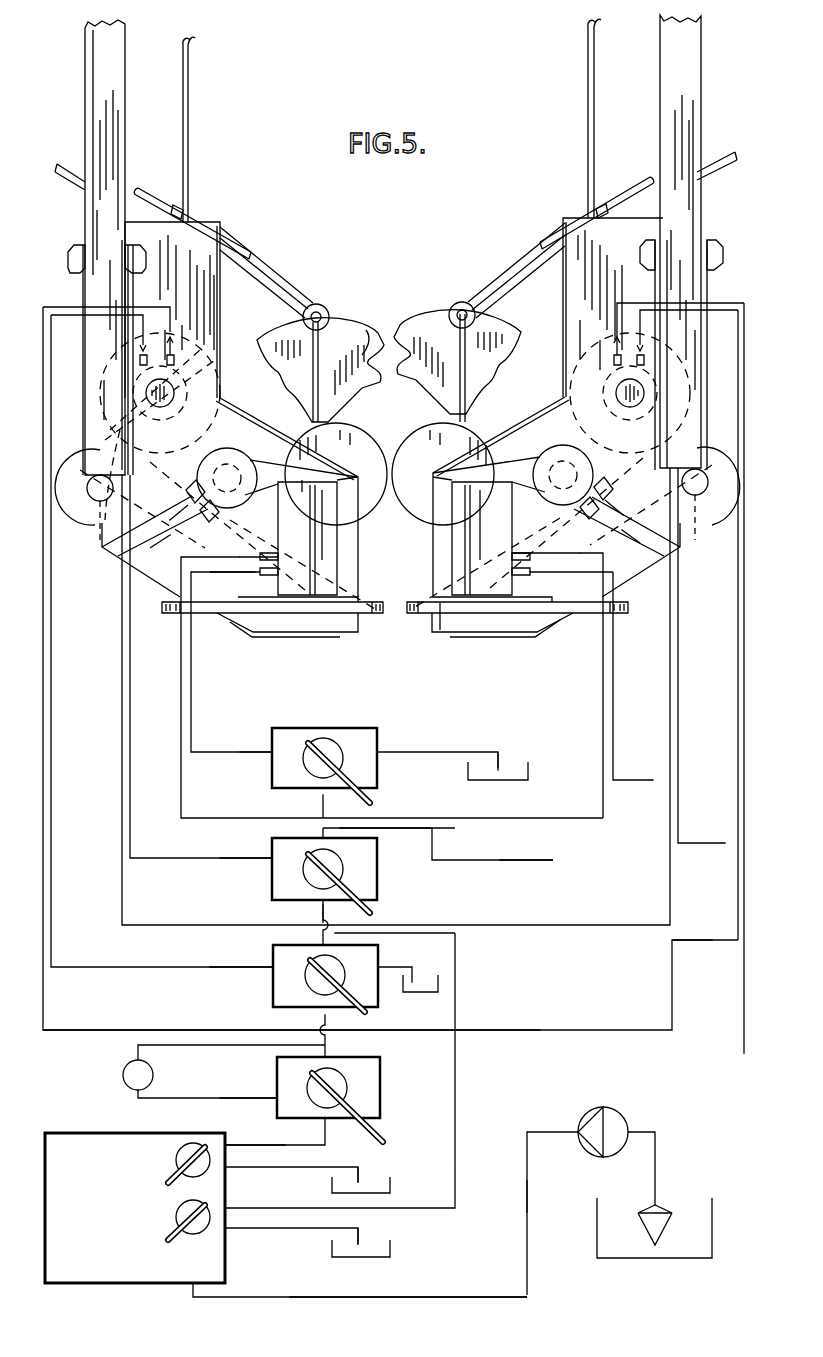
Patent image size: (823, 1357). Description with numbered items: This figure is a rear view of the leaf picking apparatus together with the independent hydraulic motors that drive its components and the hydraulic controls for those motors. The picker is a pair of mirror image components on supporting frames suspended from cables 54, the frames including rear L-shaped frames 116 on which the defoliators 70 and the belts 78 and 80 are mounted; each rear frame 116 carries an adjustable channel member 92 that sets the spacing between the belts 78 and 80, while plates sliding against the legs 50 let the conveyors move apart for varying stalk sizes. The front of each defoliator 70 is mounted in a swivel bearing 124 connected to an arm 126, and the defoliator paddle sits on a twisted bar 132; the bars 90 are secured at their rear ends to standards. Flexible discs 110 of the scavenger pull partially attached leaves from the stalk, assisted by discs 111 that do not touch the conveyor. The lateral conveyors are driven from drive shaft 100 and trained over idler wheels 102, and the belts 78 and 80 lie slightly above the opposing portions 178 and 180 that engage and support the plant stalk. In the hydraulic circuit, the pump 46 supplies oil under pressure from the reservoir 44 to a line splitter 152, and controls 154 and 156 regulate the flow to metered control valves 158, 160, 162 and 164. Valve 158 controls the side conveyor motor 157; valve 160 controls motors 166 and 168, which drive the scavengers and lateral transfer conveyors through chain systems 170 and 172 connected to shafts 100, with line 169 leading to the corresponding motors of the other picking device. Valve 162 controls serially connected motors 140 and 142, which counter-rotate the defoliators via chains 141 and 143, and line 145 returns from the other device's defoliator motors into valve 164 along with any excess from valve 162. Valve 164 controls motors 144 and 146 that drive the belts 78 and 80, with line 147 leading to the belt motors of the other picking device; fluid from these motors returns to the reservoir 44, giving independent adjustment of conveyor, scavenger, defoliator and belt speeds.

The legs 50 is at (86, 60).
The cables 54 is at (190, 105).
The channel member 92 is at (74, 255).
The rear L-shaped frame 116 is at (192, 243).
The arm 126 is at (266, 274).
The bars 90 is at (553, 232).
The swivel bearing 124 is at (317, 310).
The defoliator 70 is at (340, 326).
The twisted bar 132 is at (346, 336).
The flexible discs 110 is at (228, 385).
The hydraulic motor 166 is at (150, 398).
The hydraulic motor 168 is at (602, 378).
The chain system 170 is at (150, 428).
The chain system 172 is at (640, 415).
The hydraulic motor 140 is at (245, 452).
The hydraulic motor 142 is at (551, 455).
The scavenger assist discs 111 is at (366, 458).
The chain 141 is at (305, 455).
The chain 143 is at (480, 455).
The drive shaft 100 is at (95, 525).
The belt 80 is at (376, 600).
The belt 78 is at (418, 600).
The opposing portion 178 is at (364, 626).
The hydraulic motor 146 is at (318, 622).
The opposing portion 180 is at (437, 607).
The idler wheels 102 is at (440, 620).
The hydraulic motor 144 is at (498, 628).
The line 147 is at (625, 778).
The line 169 is at (744, 1005).
The metered control valve 164 is at (290, 728).
The metered control valve 162 is at (272, 875).
The line 145 is at (518, 862).
The metered control valve 160 is at (273, 980).
The metered control valve 158 is at (275, 1080).
The hydraulic motor 157 is at (122, 1076).
The line splitter 152 is at (118, 1284).
The control 154 is at (178, 1153).
The control 156 is at (176, 1212).
The pump 46 is at (628, 1122).
The reservoir 44 is at (532, 766).